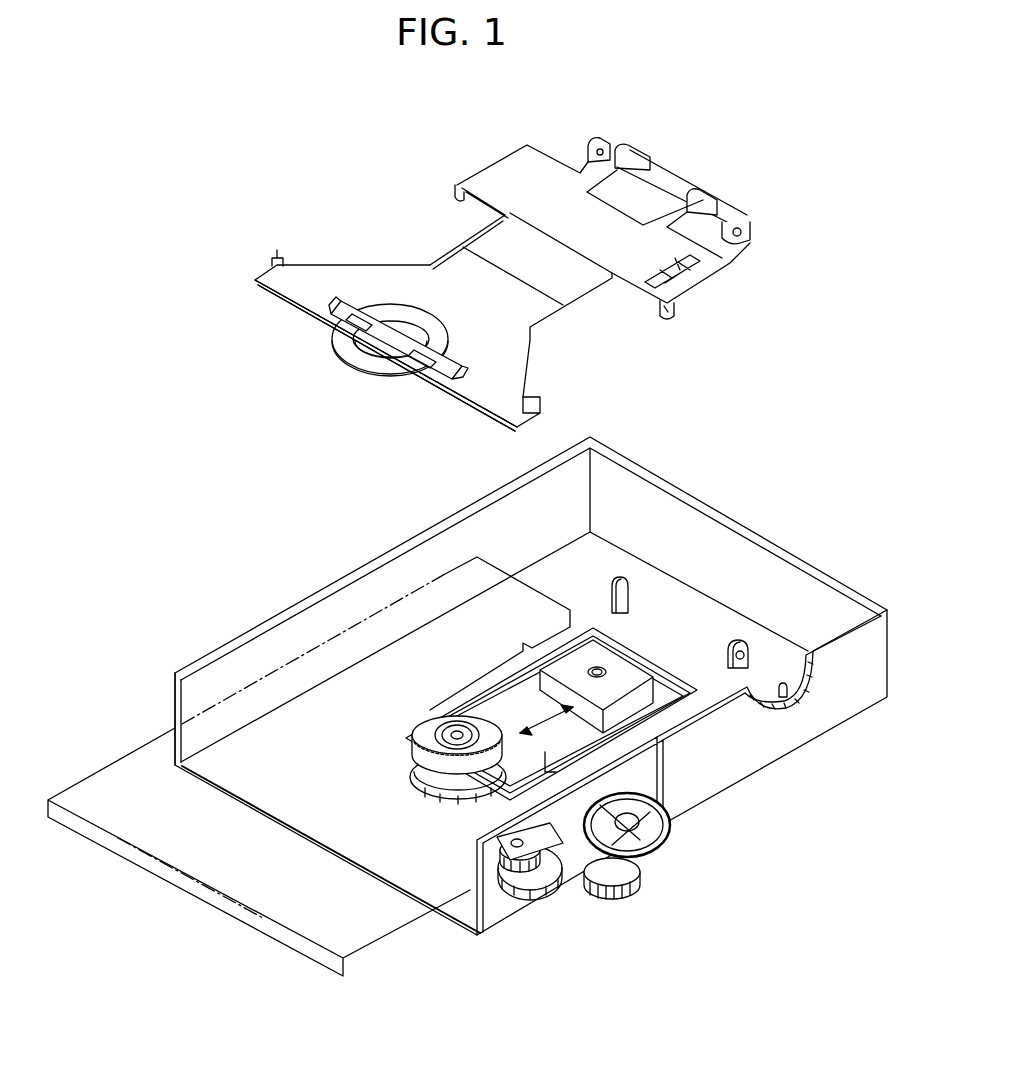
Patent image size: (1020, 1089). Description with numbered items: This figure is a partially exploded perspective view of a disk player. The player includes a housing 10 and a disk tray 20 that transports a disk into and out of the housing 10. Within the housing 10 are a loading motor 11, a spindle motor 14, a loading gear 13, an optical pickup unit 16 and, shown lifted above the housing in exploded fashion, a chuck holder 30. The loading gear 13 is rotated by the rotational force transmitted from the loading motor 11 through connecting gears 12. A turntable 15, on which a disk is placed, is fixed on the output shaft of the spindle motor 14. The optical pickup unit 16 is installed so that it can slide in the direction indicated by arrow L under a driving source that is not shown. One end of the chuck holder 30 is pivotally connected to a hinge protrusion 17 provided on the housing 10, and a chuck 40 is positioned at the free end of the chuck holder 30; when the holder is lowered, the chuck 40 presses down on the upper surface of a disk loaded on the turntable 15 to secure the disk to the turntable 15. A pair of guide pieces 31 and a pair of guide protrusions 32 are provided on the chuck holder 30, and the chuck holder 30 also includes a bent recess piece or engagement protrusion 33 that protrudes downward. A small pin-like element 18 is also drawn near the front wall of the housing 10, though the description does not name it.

The housing 10 is at (712, 805).
The loading motor 11 is at (633, 897).
The connecting gears 12 is at (647, 867).
The loading gear 13 is at (500, 845).
The spindle motor 14 is at (433, 780).
The turntable 15 is at (418, 735).
The optical pickup unit 16 is at (637, 682).
The hinge protrusion 17 is at (750, 653).
The pin 18 is at (800, 693).
The disk tray 20 is at (238, 874).
The chuck holder 30 is at (567, 155).
The guide pieces 31 is at (273, 262).
The guide protrusions 32 is at (458, 196).
The engagement protrusion 33 is at (675, 254).
The chuck 40 is at (333, 347).